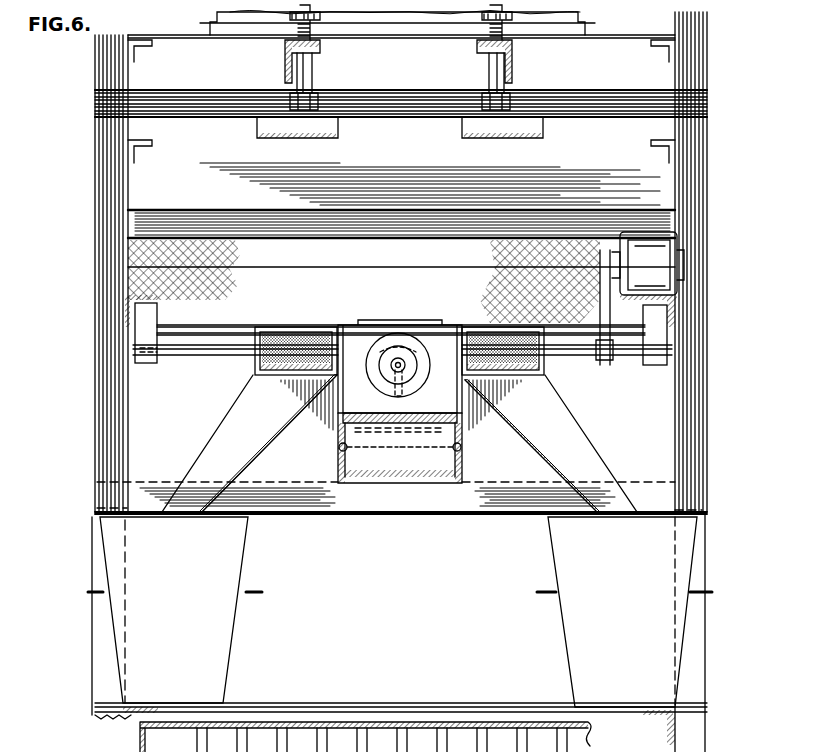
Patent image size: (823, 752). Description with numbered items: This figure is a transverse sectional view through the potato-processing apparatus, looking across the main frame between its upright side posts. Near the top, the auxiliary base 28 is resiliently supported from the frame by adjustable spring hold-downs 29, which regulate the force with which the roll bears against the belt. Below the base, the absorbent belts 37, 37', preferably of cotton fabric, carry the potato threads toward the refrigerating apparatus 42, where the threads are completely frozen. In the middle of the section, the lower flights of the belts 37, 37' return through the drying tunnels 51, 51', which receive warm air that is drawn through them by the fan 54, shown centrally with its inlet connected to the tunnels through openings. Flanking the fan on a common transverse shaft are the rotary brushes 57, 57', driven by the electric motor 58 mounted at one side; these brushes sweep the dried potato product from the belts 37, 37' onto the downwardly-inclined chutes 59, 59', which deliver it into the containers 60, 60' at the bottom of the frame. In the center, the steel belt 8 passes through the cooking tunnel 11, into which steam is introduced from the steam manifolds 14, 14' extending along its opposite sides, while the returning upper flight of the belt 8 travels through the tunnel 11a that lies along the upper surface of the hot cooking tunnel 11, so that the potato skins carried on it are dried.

The belt 8 is at (410, 423).
The cooking tunnel 11 is at (400, 448).
The tunnel 11a is at (402, 366).
The steam manifold 14 is at (345, 448).
The steam manifold 14' is at (451, 453).
The auxiliary base 28 is at (320, 52).
The spring hold-down 29 is at (290, 42).
The absorbent belt 37 is at (274, 130).
The absorbent belt 37' is at (525, 132).
The refrigerating apparatus 42 is at (401, 114).
The drying tunnel 51 is at (231, 338).
The drying tunnel 51' is at (567, 345).
The fan 54 is at (376, 356).
The rotary brush 57 is at (296, 337).
The rotary brush 57' is at (497, 334).
The electric motor 58 is at (671, 252).
The chute 59 is at (249, 443).
The chute 59' is at (551, 443).
The container 60 is at (175, 610).
The container 60' is at (624, 612).